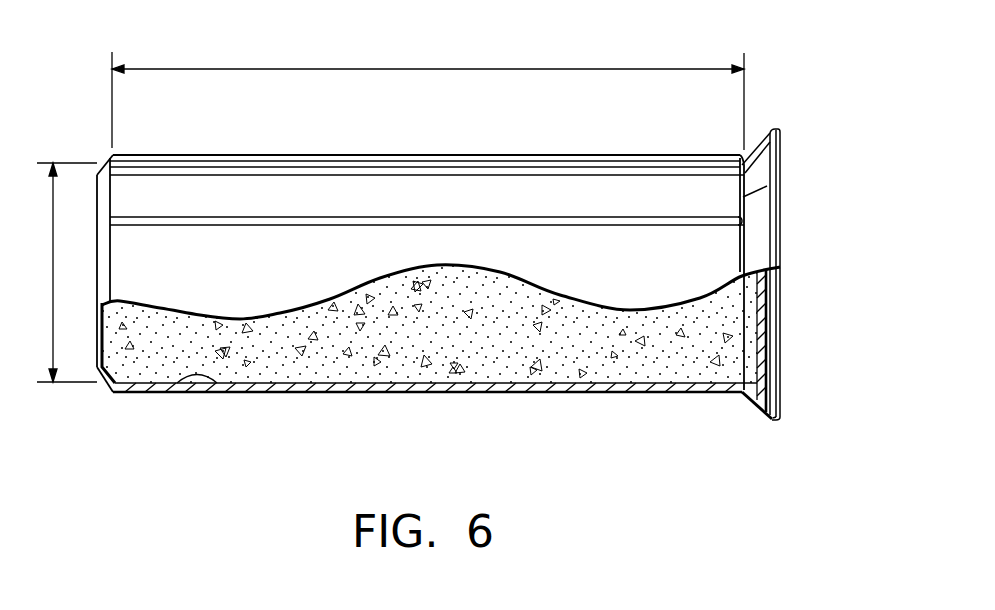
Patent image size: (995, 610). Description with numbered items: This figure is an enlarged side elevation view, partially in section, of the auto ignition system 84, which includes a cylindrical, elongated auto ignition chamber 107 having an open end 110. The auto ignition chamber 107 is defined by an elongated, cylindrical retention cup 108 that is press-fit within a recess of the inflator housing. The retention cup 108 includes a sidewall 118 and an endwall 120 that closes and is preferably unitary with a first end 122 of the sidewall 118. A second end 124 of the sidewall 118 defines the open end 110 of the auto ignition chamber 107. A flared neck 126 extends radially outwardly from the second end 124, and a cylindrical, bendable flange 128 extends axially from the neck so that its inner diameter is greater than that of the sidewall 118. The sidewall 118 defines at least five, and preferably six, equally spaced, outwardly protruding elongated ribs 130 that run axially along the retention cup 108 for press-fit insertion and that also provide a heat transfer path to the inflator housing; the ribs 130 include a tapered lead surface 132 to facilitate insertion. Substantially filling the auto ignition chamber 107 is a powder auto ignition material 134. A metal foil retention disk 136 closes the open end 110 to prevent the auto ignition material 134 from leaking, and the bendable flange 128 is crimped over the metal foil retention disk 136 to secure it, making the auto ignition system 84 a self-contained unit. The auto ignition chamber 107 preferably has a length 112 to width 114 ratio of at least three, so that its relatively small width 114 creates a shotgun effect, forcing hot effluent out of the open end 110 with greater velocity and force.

The auto ignition system 84 is at (814, 235).
The auto ignition chamber 107 is at (177, 388).
The retention cup 108 is at (695, 150).
The open end 110 is at (734, 380).
The length 112 is at (268, 68).
The width 114 is at (53, 222).
The sidewall 118 is at (518, 162).
The endwall 120 is at (95, 335).
The first end 122 is at (143, 163).
The second end 124 is at (718, 162).
The flared neck 126 is at (752, 400).
The bendable flange 128 is at (780, 400).
The ribs 130 is at (313, 216).
The tapered lead surface 132 is at (100, 205).
The auto ignition material 134 is at (525, 384).
The metal foil retention disk 136 is at (772, 331).